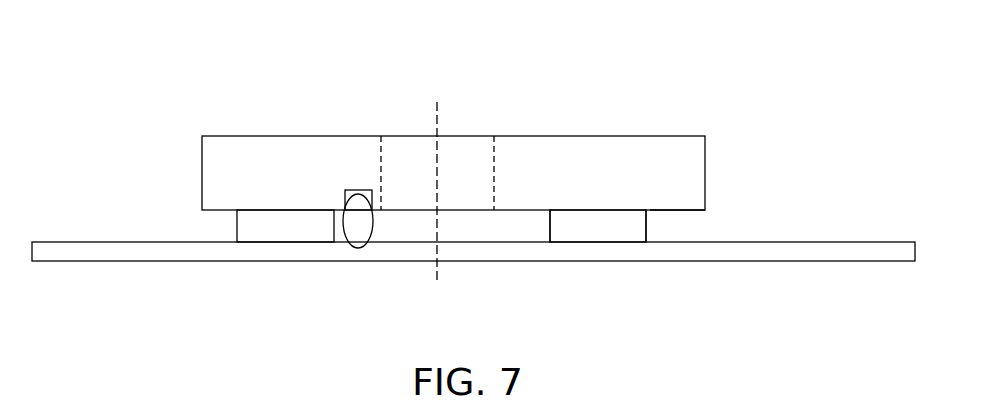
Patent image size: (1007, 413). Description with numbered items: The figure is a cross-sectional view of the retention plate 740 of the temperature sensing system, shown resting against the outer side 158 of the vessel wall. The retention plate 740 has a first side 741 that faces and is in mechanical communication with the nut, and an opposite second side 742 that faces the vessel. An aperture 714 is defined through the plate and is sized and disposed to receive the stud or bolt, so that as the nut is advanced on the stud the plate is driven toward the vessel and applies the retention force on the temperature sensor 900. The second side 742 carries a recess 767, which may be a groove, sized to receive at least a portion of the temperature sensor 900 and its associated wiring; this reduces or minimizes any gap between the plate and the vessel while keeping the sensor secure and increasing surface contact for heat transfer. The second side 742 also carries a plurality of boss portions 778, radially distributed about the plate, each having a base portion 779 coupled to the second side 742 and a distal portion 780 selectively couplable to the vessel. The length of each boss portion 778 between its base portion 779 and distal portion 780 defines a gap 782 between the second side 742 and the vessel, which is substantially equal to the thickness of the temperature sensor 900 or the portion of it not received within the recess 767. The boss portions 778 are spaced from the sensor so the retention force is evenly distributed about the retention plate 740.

The outer side 158 is at (875, 241).
The retention plate 740 is at (732, 78).
The first side 741 is at (618, 135).
The aperture 714 is at (471, 148).
The second side 742 is at (683, 211).
The boss portions 778 is at (258, 220).
The base portion 779 is at (549, 225).
The distal portion 780 is at (647, 225).
The recess 767 is at (362, 189).
The temperature sensor 900 is at (357, 228).
The gap 782 is at (401, 222).